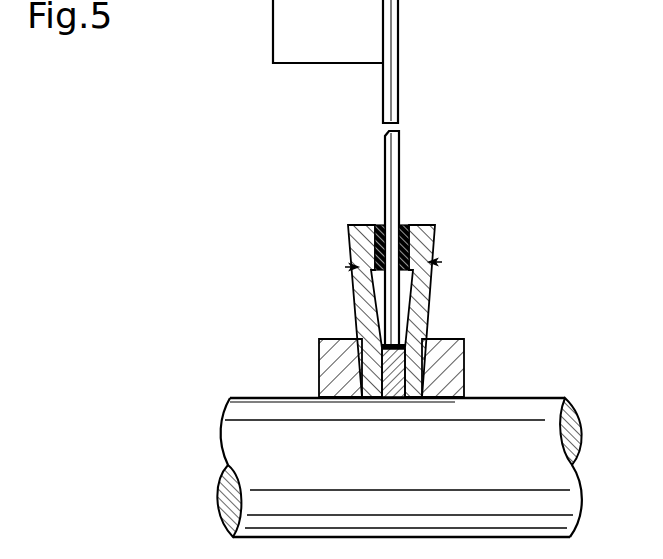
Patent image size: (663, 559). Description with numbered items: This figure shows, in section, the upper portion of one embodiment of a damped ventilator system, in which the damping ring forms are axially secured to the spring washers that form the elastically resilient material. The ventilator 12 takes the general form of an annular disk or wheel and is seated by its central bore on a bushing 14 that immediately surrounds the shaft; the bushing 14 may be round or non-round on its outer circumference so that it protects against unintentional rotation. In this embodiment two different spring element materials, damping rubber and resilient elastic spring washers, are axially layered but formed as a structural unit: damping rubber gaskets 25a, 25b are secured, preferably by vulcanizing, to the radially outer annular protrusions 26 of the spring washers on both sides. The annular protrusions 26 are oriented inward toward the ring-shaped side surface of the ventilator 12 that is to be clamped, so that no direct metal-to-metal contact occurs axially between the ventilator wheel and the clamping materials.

The ventilator 12 is at (392, 172).
The bushing 14 is at (396, 382).
The damping rubber gasket 25a is at (374, 224).
The damping rubber gasket 25b is at (409, 224).
The annular protrusions 26 is at (360, 243).